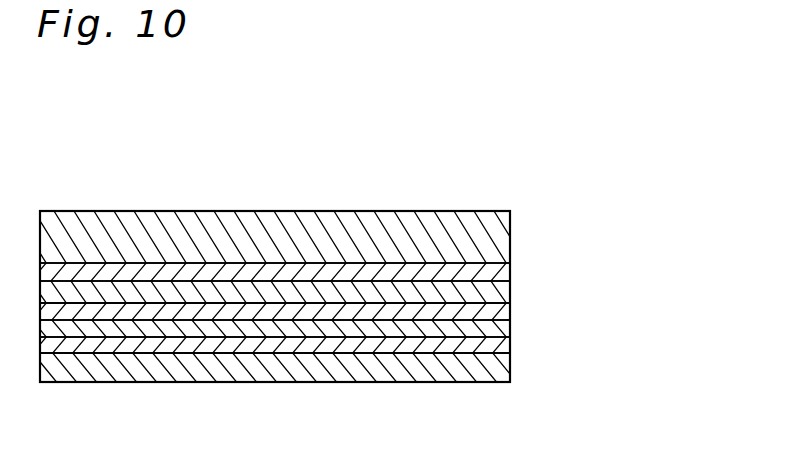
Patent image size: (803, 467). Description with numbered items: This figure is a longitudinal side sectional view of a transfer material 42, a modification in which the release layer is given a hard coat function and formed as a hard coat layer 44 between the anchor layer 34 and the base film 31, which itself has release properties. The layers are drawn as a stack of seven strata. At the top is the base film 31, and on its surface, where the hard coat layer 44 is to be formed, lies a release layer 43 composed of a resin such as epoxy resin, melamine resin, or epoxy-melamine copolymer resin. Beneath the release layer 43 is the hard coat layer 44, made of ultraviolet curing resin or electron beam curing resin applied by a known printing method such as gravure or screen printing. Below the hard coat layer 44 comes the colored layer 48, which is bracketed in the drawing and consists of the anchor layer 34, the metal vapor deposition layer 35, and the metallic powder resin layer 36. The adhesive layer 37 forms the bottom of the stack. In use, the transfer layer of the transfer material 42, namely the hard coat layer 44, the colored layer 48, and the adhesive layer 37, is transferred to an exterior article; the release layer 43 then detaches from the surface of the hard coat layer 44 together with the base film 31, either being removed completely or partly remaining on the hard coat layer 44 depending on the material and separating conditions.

The base film 31 is at (503, 228).
The release layer 43 is at (503, 268).
The hard coat layer 44 is at (502, 288).
The anchor layer 34 is at (505, 310).
The metal vapor deposition layer 35 is at (504, 327).
The metallic powder resin layer 36 is at (503, 347).
The adhesive layer 37 is at (500, 372).
The colored layer 48 is at (647, 279).
The transfer material 42 is at (264, 180).